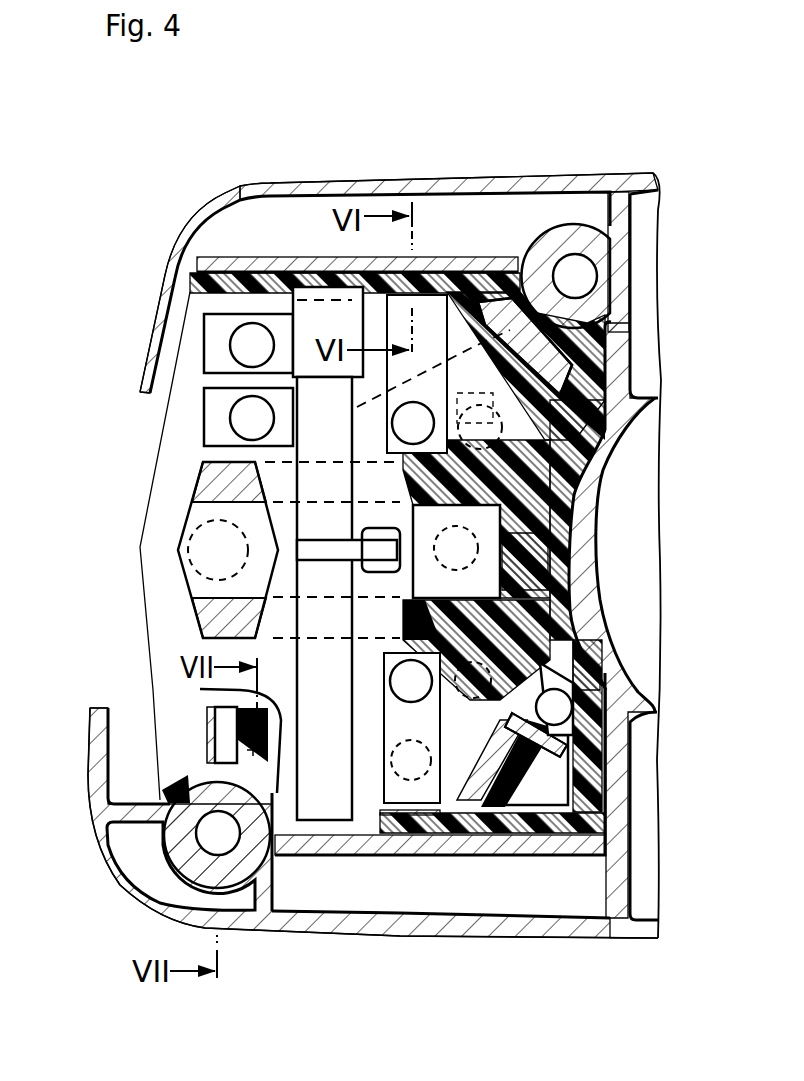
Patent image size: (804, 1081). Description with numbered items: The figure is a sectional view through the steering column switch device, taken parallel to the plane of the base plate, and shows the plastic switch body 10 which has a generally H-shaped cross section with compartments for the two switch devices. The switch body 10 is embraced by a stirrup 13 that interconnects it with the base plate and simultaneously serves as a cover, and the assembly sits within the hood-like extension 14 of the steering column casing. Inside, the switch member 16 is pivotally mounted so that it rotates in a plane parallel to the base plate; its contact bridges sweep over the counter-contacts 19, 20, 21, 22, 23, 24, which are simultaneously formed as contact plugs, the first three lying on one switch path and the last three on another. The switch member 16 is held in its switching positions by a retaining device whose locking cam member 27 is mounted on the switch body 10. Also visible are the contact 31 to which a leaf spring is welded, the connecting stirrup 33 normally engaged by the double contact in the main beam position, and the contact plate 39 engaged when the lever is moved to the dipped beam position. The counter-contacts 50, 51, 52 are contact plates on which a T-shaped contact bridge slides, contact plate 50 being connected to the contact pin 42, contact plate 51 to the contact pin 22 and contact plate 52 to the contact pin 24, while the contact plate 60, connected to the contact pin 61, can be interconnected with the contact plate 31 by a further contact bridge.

The switch body 10 is at (240, 283).
The stirrup 13 is at (292, 262).
The hood-like extension 14 is at (250, 192).
The switch member 16 is at (527, 600).
The counter-contact 19 is at (440, 400).
The counter-contact 20 is at (527, 553).
The counter-contact 21 is at (556, 708).
The counter-contact 22 is at (380, 388).
The counter-contact 23 is at (470, 537).
The counter-contact 24 is at (545, 770).
The locking cam member 27 is at (567, 423).
The contact 31 is at (523, 700).
The connecting stirrup 33 is at (217, 407).
The contact plate 39 is at (215, 328).
The contact pin 42 is at (200, 689).
The counter-contact 50 is at (240, 741).
The counter-contact 51 is at (437, 320).
The counter-contact 52 is at (390, 832).
The contact plate 60 is at (520, 742).
The contact pin 61 is at (560, 698).